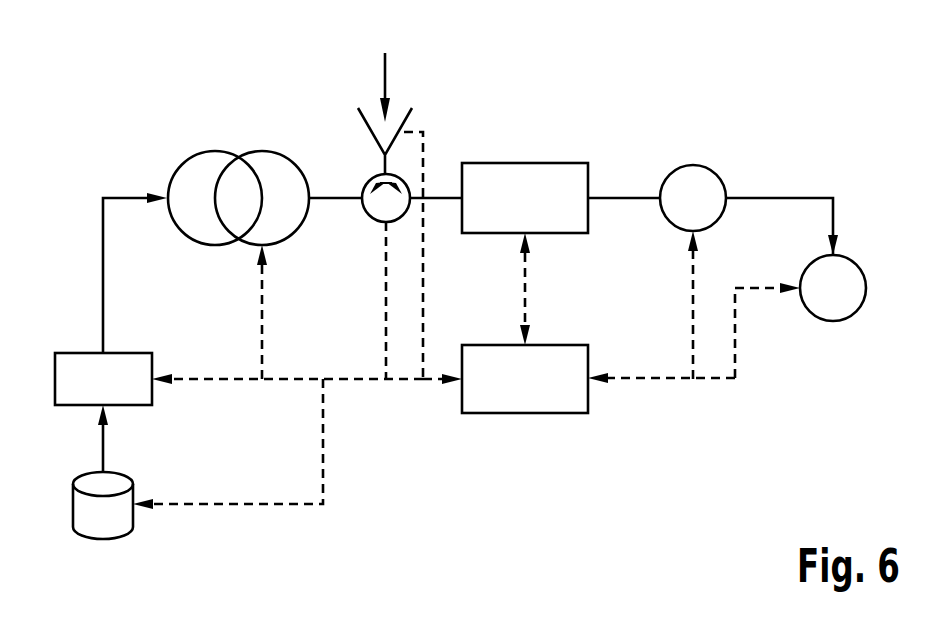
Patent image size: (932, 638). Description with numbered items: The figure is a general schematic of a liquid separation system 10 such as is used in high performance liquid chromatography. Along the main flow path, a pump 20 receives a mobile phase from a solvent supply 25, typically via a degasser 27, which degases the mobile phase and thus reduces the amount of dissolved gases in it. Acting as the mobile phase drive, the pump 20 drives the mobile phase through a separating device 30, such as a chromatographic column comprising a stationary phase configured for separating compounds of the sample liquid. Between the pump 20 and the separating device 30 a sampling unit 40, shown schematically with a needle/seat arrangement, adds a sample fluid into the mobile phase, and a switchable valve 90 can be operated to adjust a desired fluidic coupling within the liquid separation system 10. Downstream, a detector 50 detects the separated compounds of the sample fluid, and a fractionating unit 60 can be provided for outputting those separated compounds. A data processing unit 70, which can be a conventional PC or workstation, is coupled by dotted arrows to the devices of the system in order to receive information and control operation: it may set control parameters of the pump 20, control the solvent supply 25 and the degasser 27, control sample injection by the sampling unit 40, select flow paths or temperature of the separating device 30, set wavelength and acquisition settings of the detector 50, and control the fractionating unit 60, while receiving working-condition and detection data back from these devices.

The liquid separation system 10 is at (694, 476).
The pump 20 is at (240, 172).
The solvent supply 25 is at (128, 530).
The degasser 27 is at (140, 405).
The separating device 30 is at (522, 162).
The sampling unit 40 is at (402, 123).
The detector 50 is at (723, 162).
The fractionating unit 60 is at (862, 268).
The data processing unit 70 is at (525, 413).
The switchable valve 90 is at (369, 217).